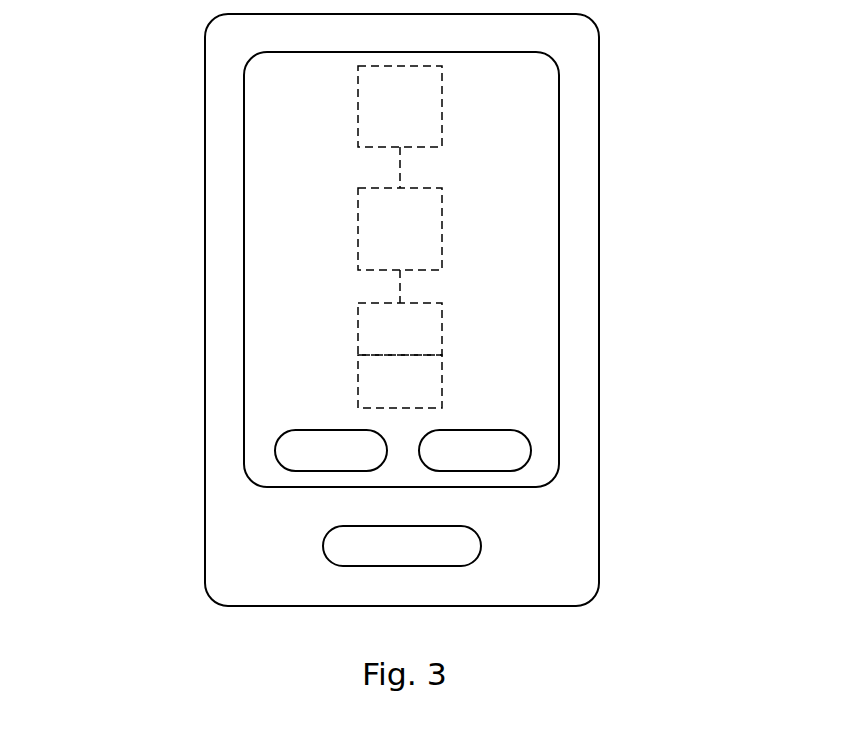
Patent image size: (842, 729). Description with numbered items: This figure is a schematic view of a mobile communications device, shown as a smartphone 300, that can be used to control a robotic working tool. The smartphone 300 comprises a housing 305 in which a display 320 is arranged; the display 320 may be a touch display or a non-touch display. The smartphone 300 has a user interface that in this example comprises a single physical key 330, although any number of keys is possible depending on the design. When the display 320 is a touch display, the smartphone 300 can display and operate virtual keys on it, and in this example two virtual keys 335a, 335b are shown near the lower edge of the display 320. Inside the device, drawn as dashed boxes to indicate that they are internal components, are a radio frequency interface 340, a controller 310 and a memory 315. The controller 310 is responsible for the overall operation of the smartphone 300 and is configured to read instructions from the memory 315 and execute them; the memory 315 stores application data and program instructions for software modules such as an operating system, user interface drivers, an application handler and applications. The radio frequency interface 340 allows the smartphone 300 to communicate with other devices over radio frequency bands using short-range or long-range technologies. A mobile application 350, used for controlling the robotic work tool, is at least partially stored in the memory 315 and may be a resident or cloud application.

The smartphone 300 is at (165, 61).
The housing 305 is at (600, 173).
The display 320 is at (540, 273).
The radio frequency interface 340 is at (400, 106).
The controller 310 is at (400, 229).
The memory 315 is at (400, 329).
The mobile application 350 is at (400, 381).
The virtual key 335a is at (275, 452).
The virtual key 335b is at (531, 450).
The physical key 330 is at (481, 545).